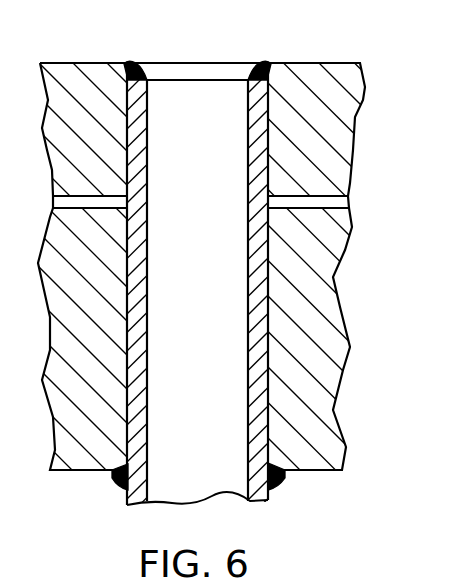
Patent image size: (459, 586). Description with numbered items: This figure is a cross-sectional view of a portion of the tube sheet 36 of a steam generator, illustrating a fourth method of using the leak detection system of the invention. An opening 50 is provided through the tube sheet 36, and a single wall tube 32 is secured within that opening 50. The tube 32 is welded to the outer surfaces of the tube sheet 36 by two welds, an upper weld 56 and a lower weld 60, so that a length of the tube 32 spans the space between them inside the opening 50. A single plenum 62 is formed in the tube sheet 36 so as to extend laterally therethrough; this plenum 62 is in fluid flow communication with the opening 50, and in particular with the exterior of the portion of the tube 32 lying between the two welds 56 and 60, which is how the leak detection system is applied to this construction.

The tube 32 is at (274, 505).
The tube sheet 36 is at (350, 347).
The opening 50 is at (258, 135).
The weld 56 is at (243, 64).
The weld 60 is at (118, 483).
The plenum 62 is at (352, 201).